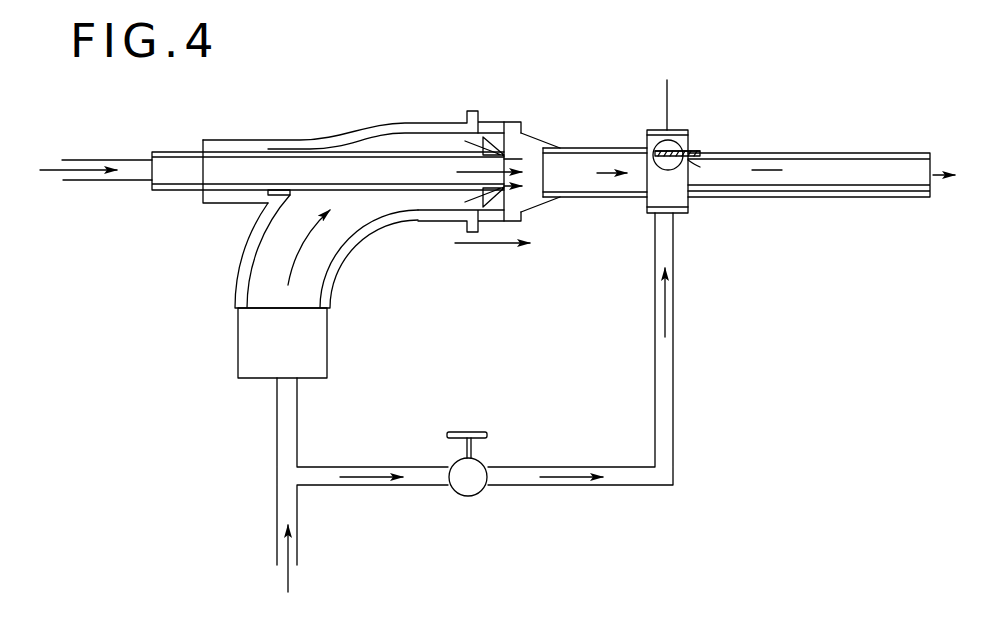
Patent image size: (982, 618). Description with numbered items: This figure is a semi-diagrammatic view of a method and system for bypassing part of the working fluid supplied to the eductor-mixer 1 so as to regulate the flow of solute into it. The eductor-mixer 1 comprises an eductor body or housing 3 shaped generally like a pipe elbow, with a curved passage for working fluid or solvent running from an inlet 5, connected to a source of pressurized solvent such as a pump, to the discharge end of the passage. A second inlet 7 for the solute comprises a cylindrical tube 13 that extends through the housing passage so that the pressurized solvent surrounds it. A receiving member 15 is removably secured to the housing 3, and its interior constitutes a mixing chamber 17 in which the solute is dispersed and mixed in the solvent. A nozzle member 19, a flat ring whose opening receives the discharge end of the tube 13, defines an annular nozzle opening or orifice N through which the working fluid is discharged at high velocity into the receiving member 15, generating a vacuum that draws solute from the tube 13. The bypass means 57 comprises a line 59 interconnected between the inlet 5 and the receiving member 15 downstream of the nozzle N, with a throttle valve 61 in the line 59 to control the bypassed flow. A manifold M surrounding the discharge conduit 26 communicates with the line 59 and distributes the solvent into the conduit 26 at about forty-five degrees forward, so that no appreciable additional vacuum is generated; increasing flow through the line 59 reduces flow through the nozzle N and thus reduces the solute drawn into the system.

The eductor-mixer 1 is at (373, 103).
The eductor body or housing 3 is at (373, 237).
The inlet 5 is at (238, 353).
The second inlet 7 is at (160, 173).
The cylindrical tube 13 is at (178, 193).
The receiving member 15 is at (697, 113).
The mixing chamber 17 is at (536, 167).
The nozzle member 19 is at (504, 130).
The annular nozzle opening or orifice N is at (508, 153).
The manifold M is at (690, 142).
The discharge conduit 26 is at (786, 152).
The bypass means 57 is at (705, 443).
The bypass line 59 is at (360, 486).
The throttle valve 61 is at (483, 462).